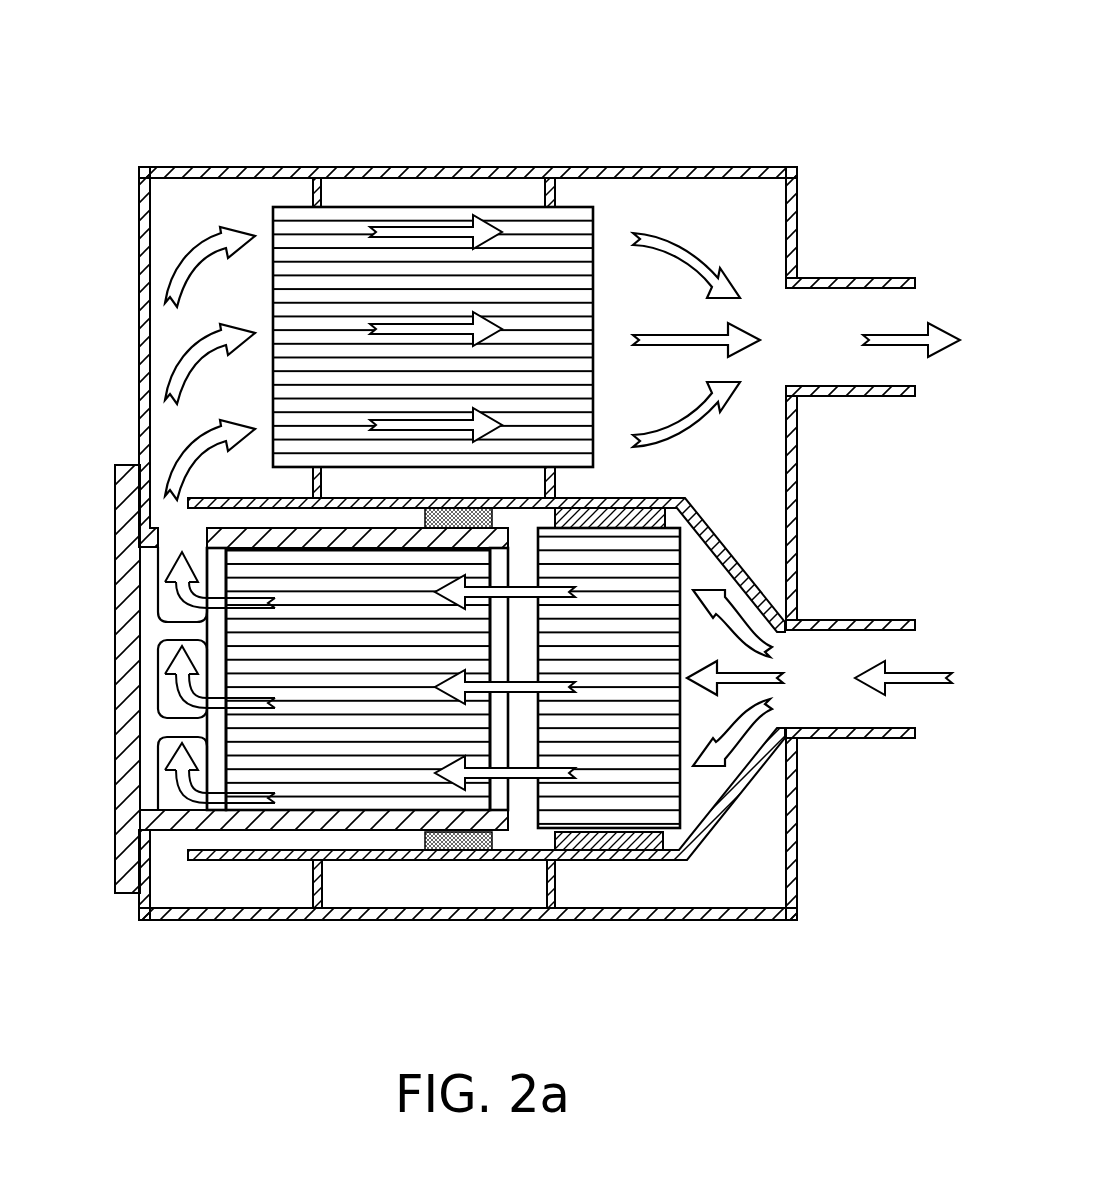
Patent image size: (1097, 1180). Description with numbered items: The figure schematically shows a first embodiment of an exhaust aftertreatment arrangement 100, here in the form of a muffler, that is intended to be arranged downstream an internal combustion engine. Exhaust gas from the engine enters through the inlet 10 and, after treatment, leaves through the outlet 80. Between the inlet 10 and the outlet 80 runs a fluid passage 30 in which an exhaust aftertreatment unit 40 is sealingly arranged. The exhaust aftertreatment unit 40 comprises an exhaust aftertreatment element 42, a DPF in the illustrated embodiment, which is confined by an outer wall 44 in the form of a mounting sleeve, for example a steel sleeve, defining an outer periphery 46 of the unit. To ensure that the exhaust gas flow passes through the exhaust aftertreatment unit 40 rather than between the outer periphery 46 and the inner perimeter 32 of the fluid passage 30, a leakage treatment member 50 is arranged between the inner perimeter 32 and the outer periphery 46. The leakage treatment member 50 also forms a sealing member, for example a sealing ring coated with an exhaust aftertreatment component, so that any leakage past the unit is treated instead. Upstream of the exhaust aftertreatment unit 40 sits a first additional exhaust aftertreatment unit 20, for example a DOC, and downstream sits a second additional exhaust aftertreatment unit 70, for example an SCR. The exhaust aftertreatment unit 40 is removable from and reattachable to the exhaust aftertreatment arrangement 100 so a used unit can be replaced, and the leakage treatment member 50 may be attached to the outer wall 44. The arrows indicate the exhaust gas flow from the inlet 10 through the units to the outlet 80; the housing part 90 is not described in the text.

The exhaust aftertreatment arrangement 100 is at (502, 510).
The inlet 10 is at (830, 665).
The first additional exhaust aftertreatment unit 20 is at (680, 777).
The fluid passage 30 is at (577, 858).
The inner perimeter 32 is at (210, 850).
The exhaust aftertreatment unit 40 is at (72, 503).
The exhaust aftertreatment element 42 is at (275, 632).
The outer wall 44 is at (285, 832).
The outer periphery 46 is at (357, 832).
The leakage treatment member 50 is at (467, 852).
The second additional exhaust aftertreatment unit 70 is at (437, 207).
The outlet 80 is at (833, 325).
The housing 90 is at (667, 167).